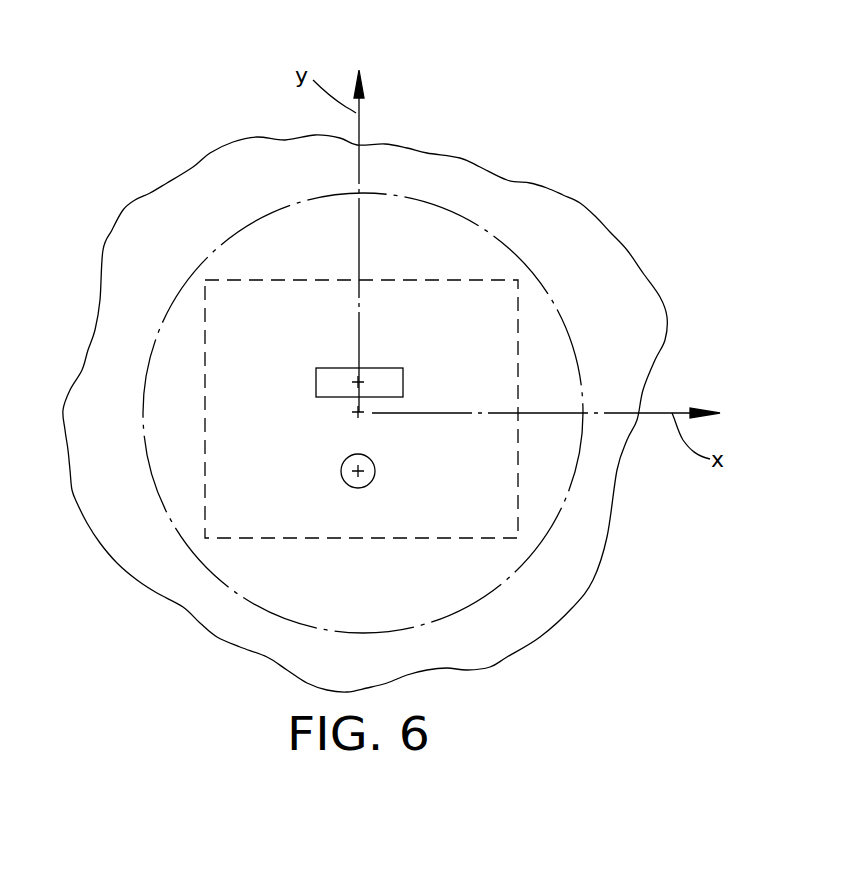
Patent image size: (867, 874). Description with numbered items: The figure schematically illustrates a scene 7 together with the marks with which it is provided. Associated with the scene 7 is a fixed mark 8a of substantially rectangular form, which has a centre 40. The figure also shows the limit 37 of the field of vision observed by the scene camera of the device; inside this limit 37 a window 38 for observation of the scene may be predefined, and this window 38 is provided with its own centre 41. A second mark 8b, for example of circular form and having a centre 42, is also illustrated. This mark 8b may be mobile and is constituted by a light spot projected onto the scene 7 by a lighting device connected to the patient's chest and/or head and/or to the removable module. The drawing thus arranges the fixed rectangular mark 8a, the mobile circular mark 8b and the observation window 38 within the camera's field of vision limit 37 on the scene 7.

The scene 7 is at (618, 240).
The limit of the field of vision 37 is at (553, 303).
The window 38 is at (427, 280).
The fixed mark 8a is at (316, 380).
The mark 8b is at (370, 483).
The centre 40 is at (358, 382).
The centre 41 is at (358, 413).
The centre 42 is at (358, 471).